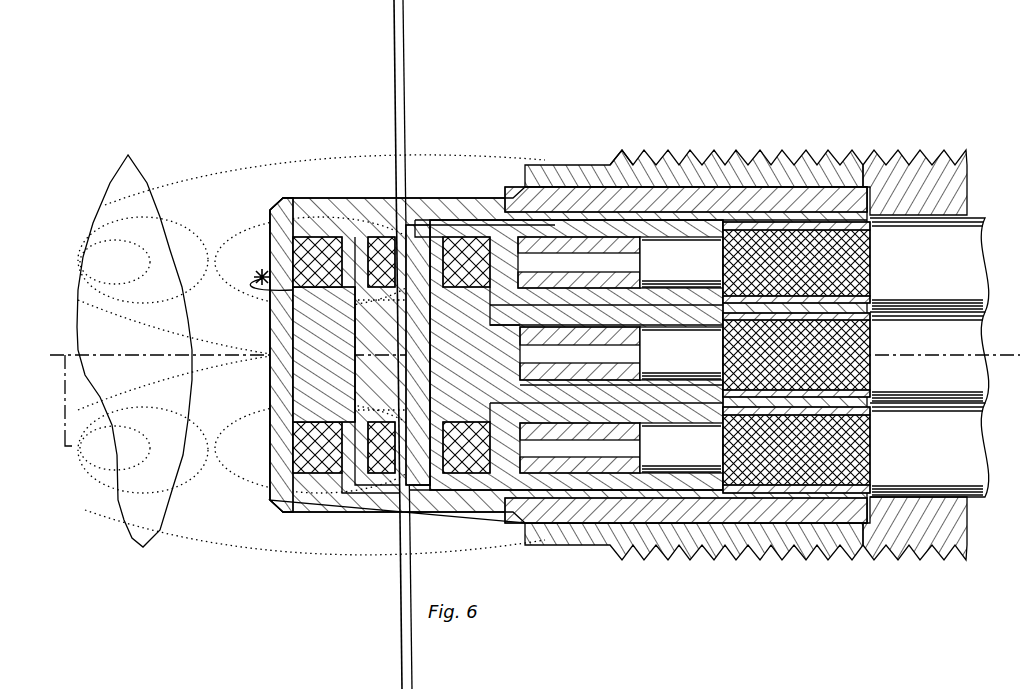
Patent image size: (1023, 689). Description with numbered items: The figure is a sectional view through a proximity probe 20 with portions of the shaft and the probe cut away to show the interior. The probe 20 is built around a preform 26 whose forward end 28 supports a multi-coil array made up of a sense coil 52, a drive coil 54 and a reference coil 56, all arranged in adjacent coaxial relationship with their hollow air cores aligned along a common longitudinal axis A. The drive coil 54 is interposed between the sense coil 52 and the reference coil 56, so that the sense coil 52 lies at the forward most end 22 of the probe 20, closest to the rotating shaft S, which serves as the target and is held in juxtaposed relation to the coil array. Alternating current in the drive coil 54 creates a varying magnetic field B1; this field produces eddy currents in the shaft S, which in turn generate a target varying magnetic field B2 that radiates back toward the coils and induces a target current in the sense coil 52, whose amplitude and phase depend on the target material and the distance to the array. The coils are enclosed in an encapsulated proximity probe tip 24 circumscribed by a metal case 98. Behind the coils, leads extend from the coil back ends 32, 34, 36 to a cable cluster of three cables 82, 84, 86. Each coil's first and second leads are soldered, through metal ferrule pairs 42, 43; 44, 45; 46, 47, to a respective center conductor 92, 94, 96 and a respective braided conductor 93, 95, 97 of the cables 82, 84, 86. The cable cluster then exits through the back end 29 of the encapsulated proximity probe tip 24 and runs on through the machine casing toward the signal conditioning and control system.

The proximity probe 20 is at (246, 84).
The forward most end 22 is at (313, 490).
The encapsulated proximity probe tip 24 is at (262, 445).
The preform 26 is at (293, 328).
The forward end 28 is at (262, 277).
The coil back end 32 is at (348, 455).
The coil back end 34 is at (422, 455).
The coil back end 36 is at (498, 455).
The metal ferrule 42 is at (578, 433).
The metal ferrule 44 is at (577, 245).
The metal ferrule 46 is at (522, 382).
The sense coil 52 is at (312, 230).
The drive coil 54 is at (380, 235).
The reference coil 56 is at (462, 236).
The center conductor 94 is at (527, 200).
The center conductor 92 is at (587, 450).
The center conductor 96 is at (520, 340).
The metal case 98 is at (822, 150).
The back end 29 is at (885, 165).
The metal ferrule 45 is at (868, 230).
The braided conductor 95 is at (868, 286).
The metal ferrule 47 is at (868, 316).
The braided conductor 97 is at (868, 367).
The metal ferrule 43 is at (868, 412).
The braided conductor 93 is at (868, 470).
The cable 84 is at (929, 265).
The cable 86 is at (929, 357).
The cable 82 is at (929, 450).
The rotating shaft S is at (125, 170).
The longitudinal axis A is at (75, 407).
The varying magnetic field B1 is at (247, 573).
The target varying magnetic field B2 is at (155, 178).